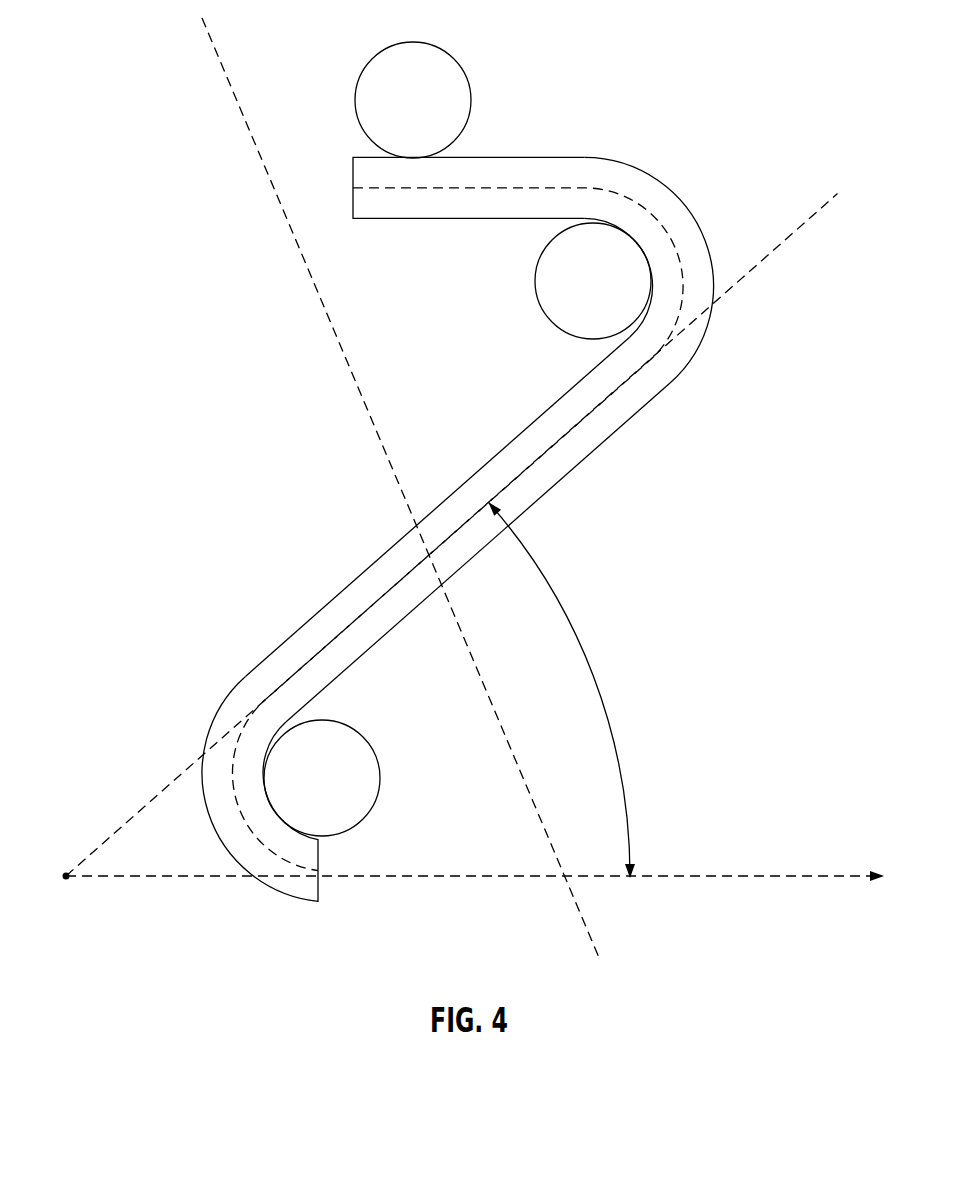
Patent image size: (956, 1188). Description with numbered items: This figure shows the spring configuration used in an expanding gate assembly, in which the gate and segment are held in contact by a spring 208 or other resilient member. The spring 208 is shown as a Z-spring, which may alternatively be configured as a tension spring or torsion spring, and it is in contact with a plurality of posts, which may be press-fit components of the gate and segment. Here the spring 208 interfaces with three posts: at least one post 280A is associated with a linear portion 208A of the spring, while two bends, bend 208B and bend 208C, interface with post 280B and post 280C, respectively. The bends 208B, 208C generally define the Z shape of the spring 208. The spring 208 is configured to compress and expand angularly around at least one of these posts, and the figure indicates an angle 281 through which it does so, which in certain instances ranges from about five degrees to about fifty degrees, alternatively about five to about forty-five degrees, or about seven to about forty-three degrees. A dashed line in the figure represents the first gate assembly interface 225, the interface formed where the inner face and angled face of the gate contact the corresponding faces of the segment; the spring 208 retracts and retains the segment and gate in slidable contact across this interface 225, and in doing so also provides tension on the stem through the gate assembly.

The spring 208 is at (451, 529).
The linear portion 208A is at (413, 220).
The bend 208B is at (682, 202).
The bend 208C is at (213, 833).
The post 280A is at (380, 80).
The post 280B is at (563, 300).
The post 280C is at (360, 793).
The first gate assembly interface 225 is at (240, 107).
The angle 281 is at (625, 784).